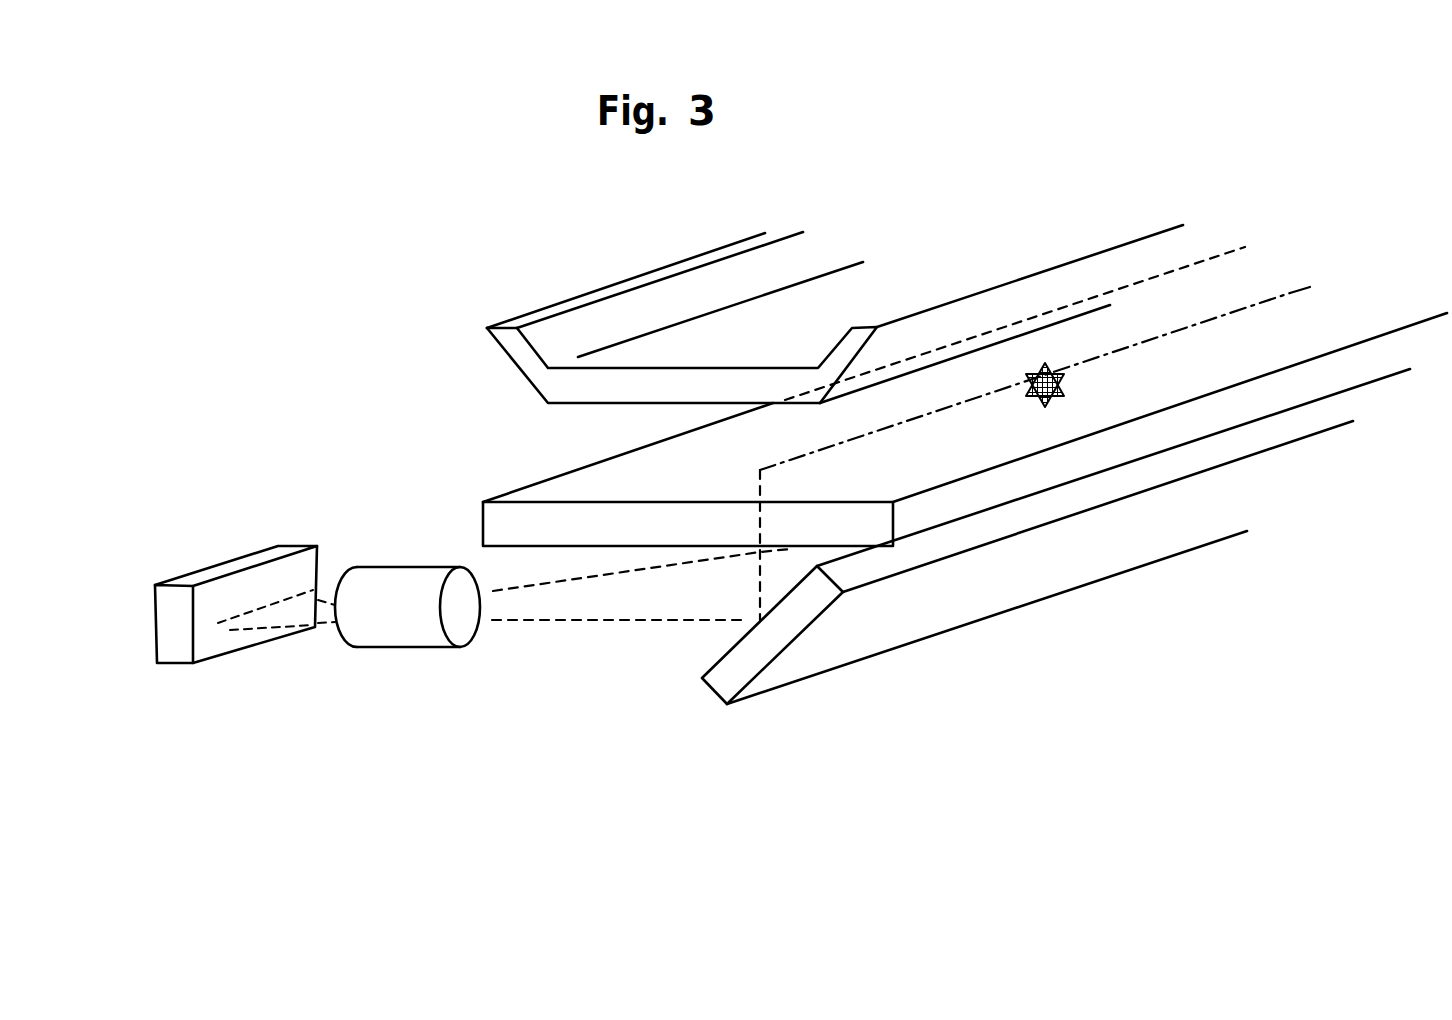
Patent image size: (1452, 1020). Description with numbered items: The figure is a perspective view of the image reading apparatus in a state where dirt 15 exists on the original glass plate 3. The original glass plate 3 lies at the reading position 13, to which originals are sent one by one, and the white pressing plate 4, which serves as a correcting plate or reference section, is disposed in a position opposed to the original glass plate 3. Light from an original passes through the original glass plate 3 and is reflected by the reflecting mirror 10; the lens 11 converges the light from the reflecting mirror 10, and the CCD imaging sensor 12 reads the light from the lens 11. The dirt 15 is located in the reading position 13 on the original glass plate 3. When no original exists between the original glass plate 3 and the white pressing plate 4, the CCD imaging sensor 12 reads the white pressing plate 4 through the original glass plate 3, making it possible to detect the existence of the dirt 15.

The original glass plate 3 is at (535, 490).
The white pressing plate 4 is at (513, 354).
The reflecting mirror 10 is at (810, 667).
The lens 11 is at (387, 648).
The CCD imaging sensor 12 is at (208, 568).
The reading position 13 is at (1290, 293).
The dirt 15 is at (1067, 382).